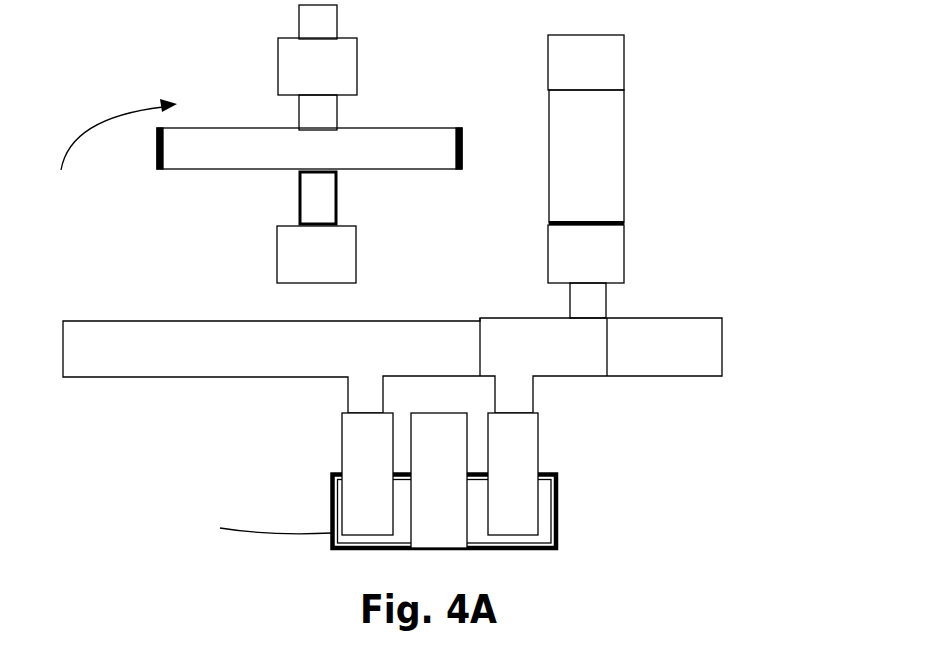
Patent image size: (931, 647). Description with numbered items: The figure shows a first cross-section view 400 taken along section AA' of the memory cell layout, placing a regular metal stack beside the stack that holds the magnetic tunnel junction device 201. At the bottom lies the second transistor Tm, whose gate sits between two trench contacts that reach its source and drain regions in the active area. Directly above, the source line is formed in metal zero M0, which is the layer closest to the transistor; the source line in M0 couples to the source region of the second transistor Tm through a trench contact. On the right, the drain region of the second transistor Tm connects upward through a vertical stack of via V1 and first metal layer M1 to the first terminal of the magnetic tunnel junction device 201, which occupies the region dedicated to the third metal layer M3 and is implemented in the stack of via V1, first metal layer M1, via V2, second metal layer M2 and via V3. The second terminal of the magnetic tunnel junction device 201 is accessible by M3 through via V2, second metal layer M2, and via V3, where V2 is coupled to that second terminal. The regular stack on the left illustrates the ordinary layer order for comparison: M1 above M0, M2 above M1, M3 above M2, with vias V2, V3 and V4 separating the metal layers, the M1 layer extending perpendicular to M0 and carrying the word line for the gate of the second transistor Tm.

The first cross-section view 400 is at (112, 51).
The MTJ device 201 is at (622, 181).
The metal zero layer M0 is at (392, 365).
The first metal layer M1 is at (450, 254).
The second metal layer M2 is at (309, 148).
The third metal layer M3 is at (451, 65).
The via V1 is at (588, 300).
The via V2 is at (318, 198).
The via V3 is at (318, 112).
The via V4 is at (318, 22).
The second transistor Tm is at (580, 473).